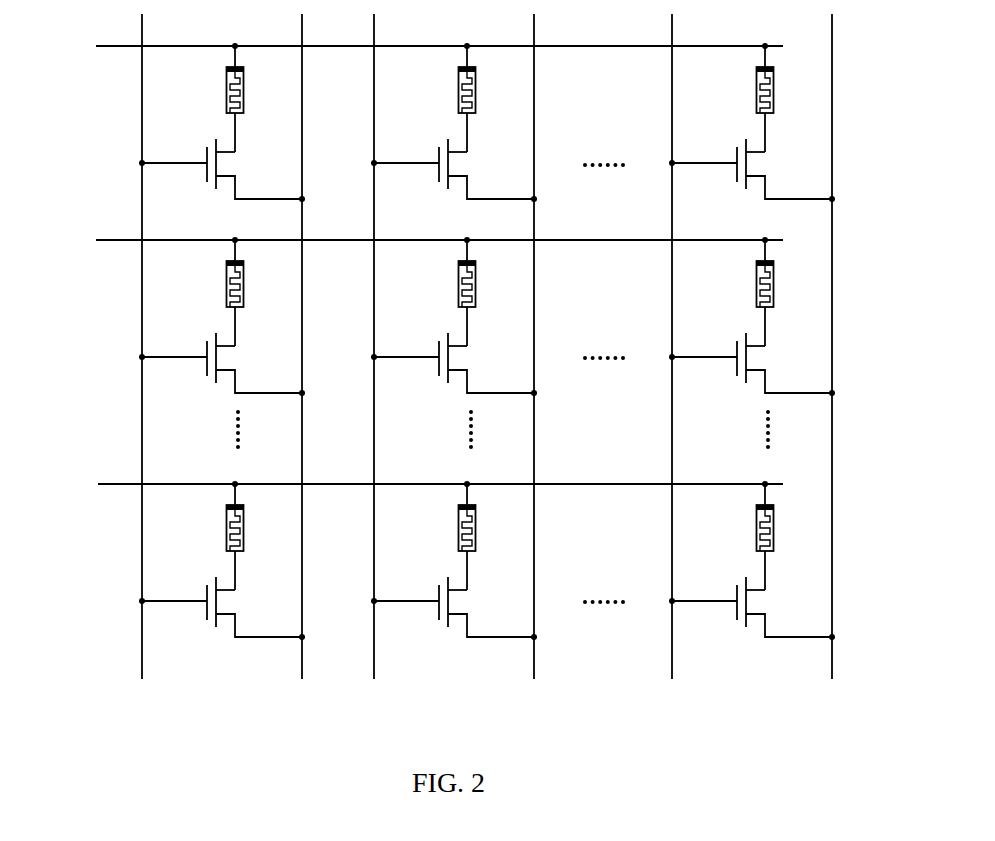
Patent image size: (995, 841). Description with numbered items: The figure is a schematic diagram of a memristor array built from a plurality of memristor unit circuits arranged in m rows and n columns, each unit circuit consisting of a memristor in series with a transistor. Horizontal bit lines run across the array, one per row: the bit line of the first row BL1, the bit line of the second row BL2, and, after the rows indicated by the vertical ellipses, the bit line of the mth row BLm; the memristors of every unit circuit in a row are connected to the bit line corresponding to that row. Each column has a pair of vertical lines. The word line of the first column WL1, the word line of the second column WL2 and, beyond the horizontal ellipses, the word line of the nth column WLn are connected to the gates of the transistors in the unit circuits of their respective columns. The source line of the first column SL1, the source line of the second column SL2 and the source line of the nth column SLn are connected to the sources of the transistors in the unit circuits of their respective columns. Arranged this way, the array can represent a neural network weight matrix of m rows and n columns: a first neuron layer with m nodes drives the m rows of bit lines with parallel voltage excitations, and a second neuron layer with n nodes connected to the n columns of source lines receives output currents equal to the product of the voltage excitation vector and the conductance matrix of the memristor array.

The bit line of the first row BL1 is at (408, 47).
The bit line of the second row BL2 is at (408, 241).
The bit line of the mth row BLm is at (407, 487).
The word line of the first column WL1 is at (140, 362).
The word line of the second column WL2 is at (380, 362).
The word line of the nth column WLn is at (670, 362).
The source line of the first column SL1 is at (292, 362).
The source line of the second column SL2 is at (540, 362).
The source line of the nth column SLn is at (837, 362).